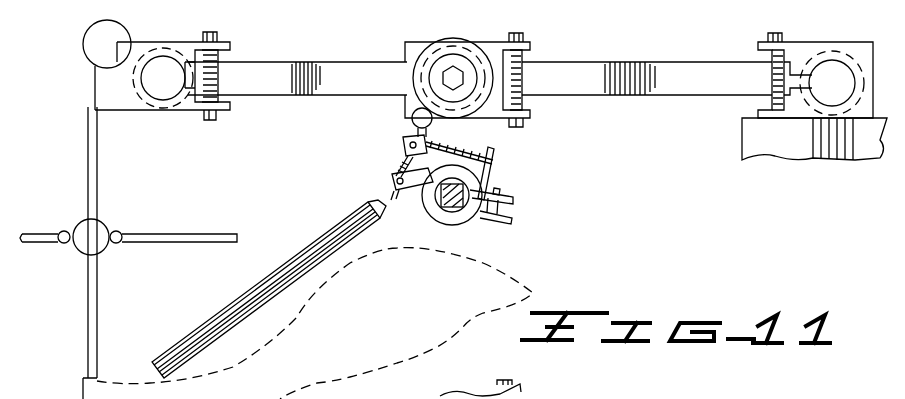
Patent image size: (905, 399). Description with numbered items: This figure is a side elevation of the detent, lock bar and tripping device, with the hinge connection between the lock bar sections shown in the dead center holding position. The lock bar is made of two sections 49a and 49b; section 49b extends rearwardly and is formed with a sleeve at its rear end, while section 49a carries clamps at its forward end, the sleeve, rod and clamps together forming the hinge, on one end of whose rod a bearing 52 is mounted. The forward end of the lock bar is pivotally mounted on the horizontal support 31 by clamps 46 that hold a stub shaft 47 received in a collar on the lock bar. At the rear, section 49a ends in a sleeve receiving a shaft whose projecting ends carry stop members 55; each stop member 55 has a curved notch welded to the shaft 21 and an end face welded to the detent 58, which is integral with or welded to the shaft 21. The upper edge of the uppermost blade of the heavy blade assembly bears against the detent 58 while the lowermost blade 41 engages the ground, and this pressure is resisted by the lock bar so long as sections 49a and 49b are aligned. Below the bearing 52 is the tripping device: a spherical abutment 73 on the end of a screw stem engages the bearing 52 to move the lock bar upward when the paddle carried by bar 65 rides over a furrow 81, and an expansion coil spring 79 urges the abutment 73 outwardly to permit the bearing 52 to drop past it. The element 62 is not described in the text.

The shaft 21 is at (92, 37).
The detent 58 is at (106, 108).
The stop member 55 is at (176, 112).
The lock bar section 49a is at (335, 55).
The bearing 52 is at (445, 37).
The lock bar section 49b is at (660, 70).
The clamp 46 is at (858, 48).
The stub shaft 47 is at (822, 66).
The horizontal support 31 is at (813, 149).
The spherical abutment 73 is at (412, 123).
The expansion coil spring 79 is at (482, 144).
The blade 41 is at (97, 298).
The bar 65 is at (262, 287).
The furrow 81 is at (423, 295).
The plate 62 is at (440, 396).